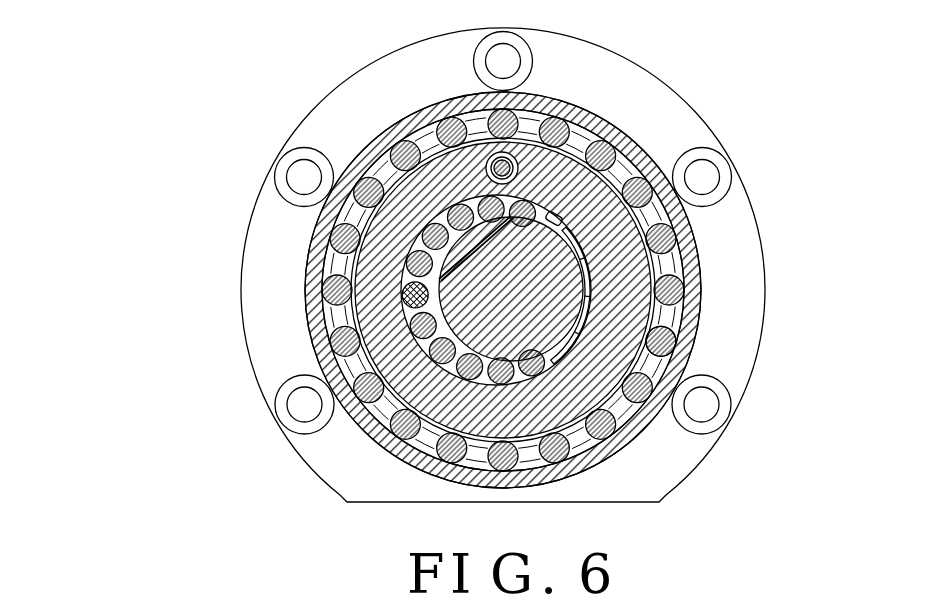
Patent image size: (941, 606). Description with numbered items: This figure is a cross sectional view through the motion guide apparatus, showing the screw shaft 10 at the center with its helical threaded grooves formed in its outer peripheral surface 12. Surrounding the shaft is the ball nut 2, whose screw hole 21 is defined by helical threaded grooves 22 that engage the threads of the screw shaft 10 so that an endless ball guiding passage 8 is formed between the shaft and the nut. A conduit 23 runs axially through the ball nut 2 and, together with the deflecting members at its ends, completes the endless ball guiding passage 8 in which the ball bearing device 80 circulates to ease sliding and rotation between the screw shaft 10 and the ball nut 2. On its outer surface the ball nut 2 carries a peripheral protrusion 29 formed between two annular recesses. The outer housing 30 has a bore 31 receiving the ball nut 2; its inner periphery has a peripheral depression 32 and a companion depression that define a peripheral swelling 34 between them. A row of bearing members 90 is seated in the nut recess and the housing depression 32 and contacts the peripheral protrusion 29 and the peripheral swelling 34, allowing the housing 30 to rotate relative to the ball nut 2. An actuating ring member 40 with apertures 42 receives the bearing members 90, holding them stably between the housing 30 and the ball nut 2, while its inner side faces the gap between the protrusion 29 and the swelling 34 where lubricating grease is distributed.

The ball nut 2 is at (628, 430).
The endless ball guiding passage 8 is at (487, 437).
The screw shaft 10 is at (548, 340).
The outer peripheral surface 12 is at (500, 380).
The screw hole 21 is at (445, 380).
The helical threaded grooves 22 is at (352, 405).
The conduit 23 is at (513, 182).
The peripheral protrusion 29 is at (385, 180).
The outer housing 30 is at (680, 153).
The bore 31 is at (636, 155).
The peripheral depression 32 is at (330, 266).
The peripheral swelling 34 is at (327, 328).
The actuating ring member 40 is at (663, 318).
The apertures 42 is at (670, 328).
The ball bearing device 80 is at (422, 262).
The bearing members 90 is at (668, 350).